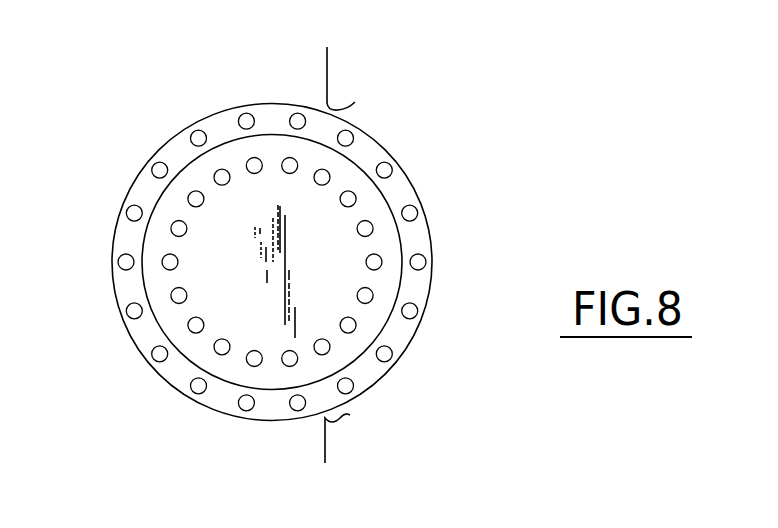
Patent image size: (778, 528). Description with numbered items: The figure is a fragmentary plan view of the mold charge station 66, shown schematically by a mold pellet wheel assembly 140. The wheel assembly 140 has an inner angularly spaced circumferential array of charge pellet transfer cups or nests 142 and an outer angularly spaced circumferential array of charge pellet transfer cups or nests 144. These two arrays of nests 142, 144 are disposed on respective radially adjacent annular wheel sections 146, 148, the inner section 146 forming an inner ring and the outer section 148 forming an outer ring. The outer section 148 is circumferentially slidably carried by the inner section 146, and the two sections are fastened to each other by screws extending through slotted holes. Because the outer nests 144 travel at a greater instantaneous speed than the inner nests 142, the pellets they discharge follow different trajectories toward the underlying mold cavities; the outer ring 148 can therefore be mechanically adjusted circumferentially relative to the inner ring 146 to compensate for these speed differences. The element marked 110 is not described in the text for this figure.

The mold charge station 66 is at (243, 90).
The shaft 110 is at (342, 82).
The mold pellet wheel assembly 140 is at (110, 280).
The charge pellet transfer cups or nests 142 is at (369, 297).
The charge pellet transfer cups or nests 144 is at (125, 262).
The inner annular wheel section 146 is at (285, 383).
The outer annular wheel section 148 is at (137, 332).